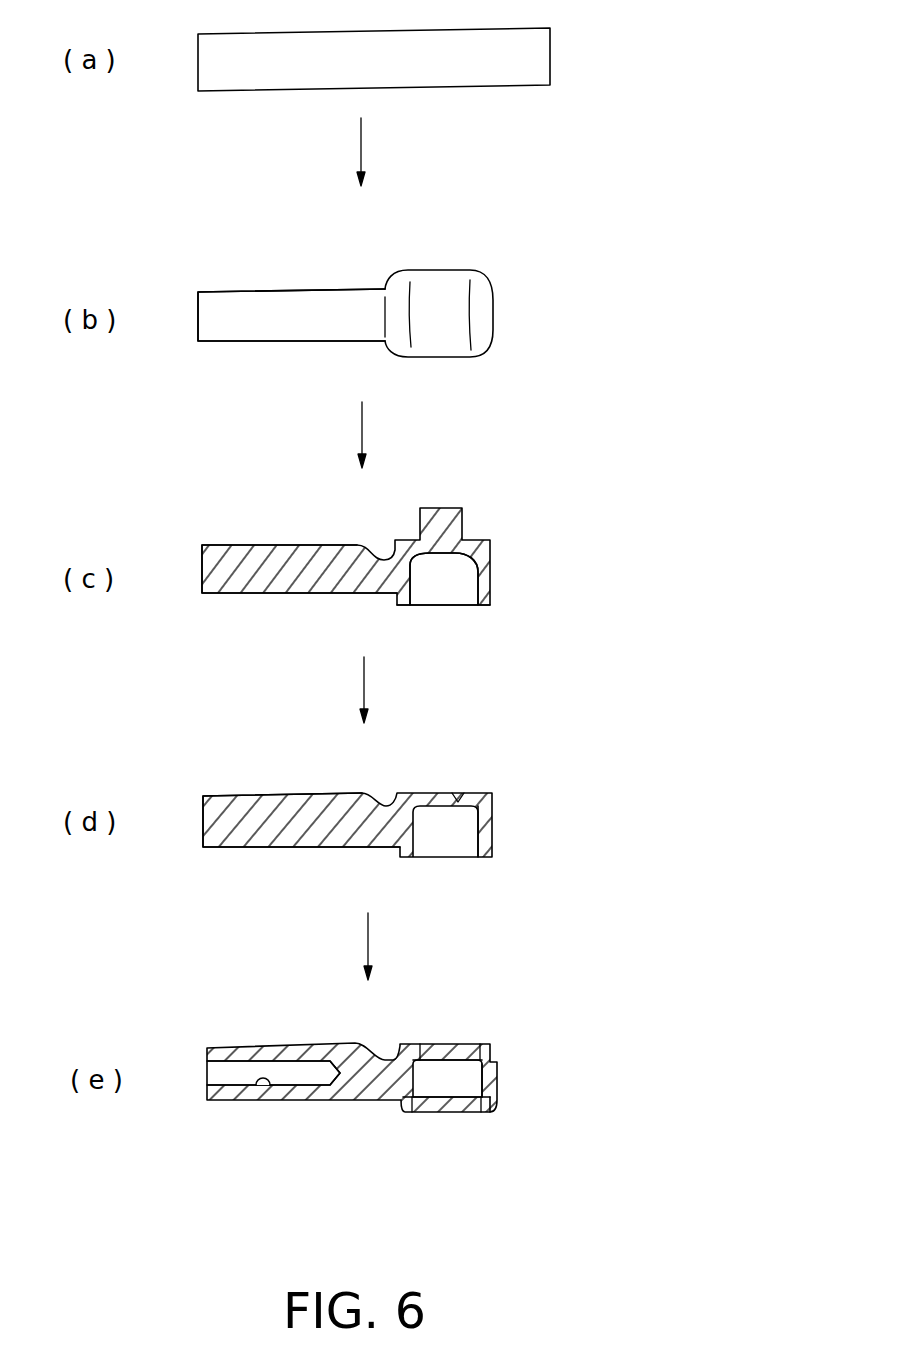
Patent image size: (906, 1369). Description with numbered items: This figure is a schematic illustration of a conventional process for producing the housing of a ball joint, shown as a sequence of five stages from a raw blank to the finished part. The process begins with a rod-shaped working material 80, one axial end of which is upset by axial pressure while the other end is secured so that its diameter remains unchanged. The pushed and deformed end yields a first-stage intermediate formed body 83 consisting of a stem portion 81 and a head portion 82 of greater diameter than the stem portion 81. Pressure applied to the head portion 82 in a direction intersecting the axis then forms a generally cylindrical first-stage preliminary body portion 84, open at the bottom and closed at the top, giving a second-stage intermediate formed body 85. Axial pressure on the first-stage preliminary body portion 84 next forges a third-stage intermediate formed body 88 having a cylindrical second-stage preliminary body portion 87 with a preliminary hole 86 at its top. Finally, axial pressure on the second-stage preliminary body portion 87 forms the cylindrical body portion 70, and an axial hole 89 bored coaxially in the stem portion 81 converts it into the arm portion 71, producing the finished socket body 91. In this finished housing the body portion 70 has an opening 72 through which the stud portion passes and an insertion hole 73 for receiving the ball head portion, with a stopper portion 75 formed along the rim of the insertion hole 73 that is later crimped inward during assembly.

The working material 80 is at (550, 58).
The stem portion 81 is at (282, 333).
The head portion 82 is at (447, 346).
The first-stage intermediate formed body 83 is at (387, 337).
The first-stage preliminary body portion 84 is at (490, 592).
The second-stage intermediate formed body 85 is at (390, 572).
The preliminary hole 86 is at (457, 800).
The second-stage preliminary body portion 87 is at (492, 820).
The third-stage intermediate formed body 88 is at (398, 796).
The axial hole 89 is at (250, 1091).
The socket body 91 is at (398, 1075).
The body portion 70 is at (497, 1078).
The arm portion 71 is at (306, 1101).
The opening 72 is at (476, 1050).
The insertion hole 73 is at (470, 1101).
The stopper portion 75 is at (496, 1108).